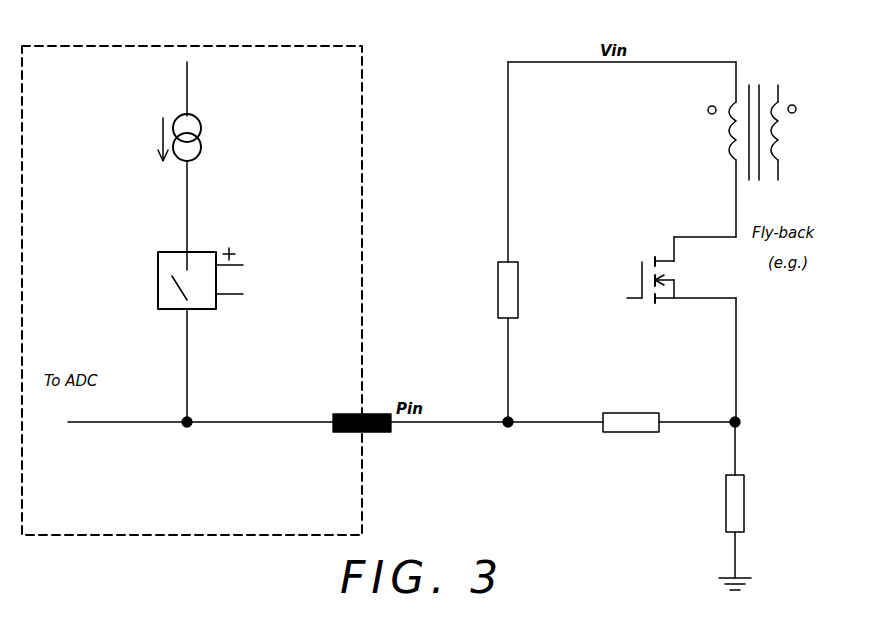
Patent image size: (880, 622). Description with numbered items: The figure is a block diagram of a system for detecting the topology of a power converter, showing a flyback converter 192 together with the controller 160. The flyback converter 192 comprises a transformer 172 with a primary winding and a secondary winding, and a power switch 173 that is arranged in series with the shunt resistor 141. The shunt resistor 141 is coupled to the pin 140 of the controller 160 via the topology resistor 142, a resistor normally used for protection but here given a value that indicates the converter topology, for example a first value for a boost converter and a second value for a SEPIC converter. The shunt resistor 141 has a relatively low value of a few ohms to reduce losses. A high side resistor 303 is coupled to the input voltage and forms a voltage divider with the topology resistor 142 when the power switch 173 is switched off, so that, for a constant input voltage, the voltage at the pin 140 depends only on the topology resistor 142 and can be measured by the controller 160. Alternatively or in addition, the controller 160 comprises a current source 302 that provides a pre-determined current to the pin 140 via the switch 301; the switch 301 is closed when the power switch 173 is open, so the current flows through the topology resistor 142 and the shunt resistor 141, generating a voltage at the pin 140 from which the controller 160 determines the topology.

The pin 140 is at (338, 413).
The shunt resistor R1 141 is at (760, 500).
The topology resistor R2 142 is at (607, 439).
The controller 160 is at (362, 512).
The transformer TX2 172 is at (703, 128).
The power switch 173 is at (680, 270).
The flyback converter 192 is at (790, 65).
The switch SW1 301 is at (247, 280).
The current source 302 is at (212, 137).
The high side resistor R3 303 is at (490, 303).